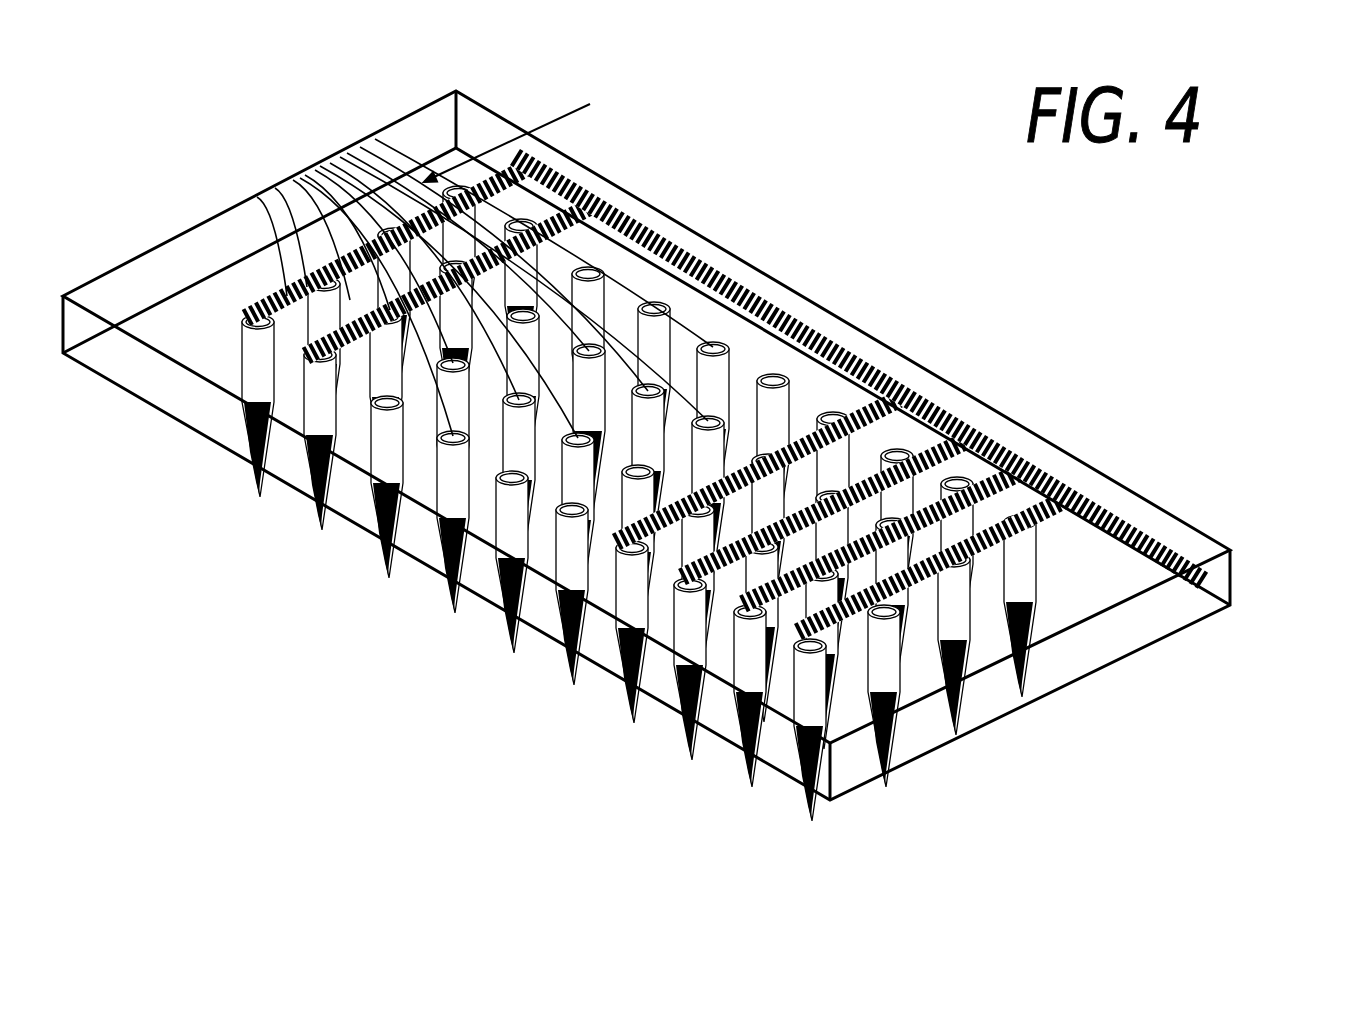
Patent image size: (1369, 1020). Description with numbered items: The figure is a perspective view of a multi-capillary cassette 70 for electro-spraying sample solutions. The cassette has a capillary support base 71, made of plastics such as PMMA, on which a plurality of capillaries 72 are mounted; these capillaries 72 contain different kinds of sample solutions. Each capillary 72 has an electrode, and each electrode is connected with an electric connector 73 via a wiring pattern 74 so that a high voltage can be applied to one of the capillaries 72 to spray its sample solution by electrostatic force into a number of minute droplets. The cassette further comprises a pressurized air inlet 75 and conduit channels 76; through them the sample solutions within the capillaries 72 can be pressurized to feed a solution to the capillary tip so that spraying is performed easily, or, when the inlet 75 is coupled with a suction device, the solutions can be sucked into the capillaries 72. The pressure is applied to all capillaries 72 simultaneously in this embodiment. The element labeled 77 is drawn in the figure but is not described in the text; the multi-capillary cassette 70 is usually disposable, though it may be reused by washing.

The multi-capillary cassette 70 is at (235, 187).
The capillary support base 71 is at (1130, 490).
The capillary 72 is at (381, 570).
The electric connector 73 is at (297, 172).
The wiring pattern 74 is at (523, 131).
The pressurized air inlet 75 is at (1215, 598).
The conduit channel 76 is at (830, 318).
The microneedle 77 is at (960, 700).